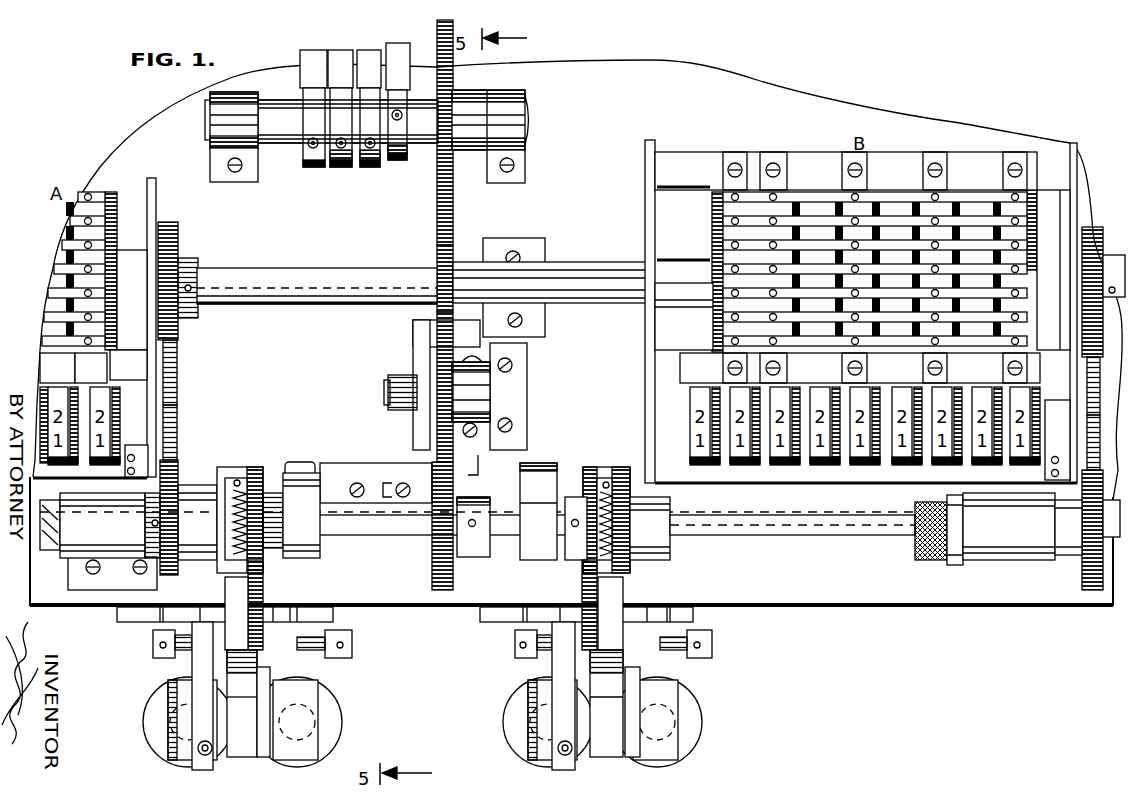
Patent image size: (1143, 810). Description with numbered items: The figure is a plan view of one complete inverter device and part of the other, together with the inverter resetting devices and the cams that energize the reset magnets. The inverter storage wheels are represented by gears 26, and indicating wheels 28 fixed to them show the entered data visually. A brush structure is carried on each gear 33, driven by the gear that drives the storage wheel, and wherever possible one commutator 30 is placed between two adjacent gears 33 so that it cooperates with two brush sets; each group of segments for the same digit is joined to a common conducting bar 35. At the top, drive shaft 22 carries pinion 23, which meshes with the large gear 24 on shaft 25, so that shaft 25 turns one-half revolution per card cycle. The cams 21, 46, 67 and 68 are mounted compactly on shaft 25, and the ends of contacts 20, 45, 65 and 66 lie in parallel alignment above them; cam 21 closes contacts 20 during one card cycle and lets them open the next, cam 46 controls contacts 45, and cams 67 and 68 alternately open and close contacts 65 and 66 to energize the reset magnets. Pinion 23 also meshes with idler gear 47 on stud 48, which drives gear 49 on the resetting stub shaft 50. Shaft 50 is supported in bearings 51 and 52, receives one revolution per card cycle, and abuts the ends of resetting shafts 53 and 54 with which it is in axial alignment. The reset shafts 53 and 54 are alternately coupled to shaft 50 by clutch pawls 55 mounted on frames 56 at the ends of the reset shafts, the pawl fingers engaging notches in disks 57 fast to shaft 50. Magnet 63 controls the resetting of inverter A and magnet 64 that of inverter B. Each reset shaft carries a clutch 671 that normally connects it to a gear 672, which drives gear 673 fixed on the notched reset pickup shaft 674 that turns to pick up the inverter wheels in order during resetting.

The contacts 20 is at (308, 60).
The cam 21 is at (315, 168).
The drive shaft 22 is at (328, 275).
The pinion 23 is at (432, 255).
The gear 24 is at (453, 58).
The shaft 25 is at (423, 148).
The gears 26 is at (100, 456).
The indicating wheels 28 is at (62, 458).
The commutator 30 is at (98, 185).
The gear 33 is at (113, 204).
The common conducting bar 35 is at (57, 242).
The contacts 45 is at (338, 56).
The cam 46 is at (338, 168).
The idler gear 47 is at (432, 436).
The stud 48 is at (397, 412).
The gear 49 is at (433, 582).
The resetting stub shaft 50 is at (404, 538).
The bearing 51 is at (313, 557).
The bearing 52 is at (520, 555).
The resetting shaft 53 is at (782, 538).
The resetting shaft 54 is at (38, 538).
The clutch pawl 55 is at (265, 590).
The frame 56 is at (232, 596).
The disk 57 is at (253, 473).
The magnet 63 is at (325, 705).
The magnet 64 is at (692, 705).
The contacts 65 is at (371, 56).
The contacts 66 is at (402, 56).
The cam 67 is at (370, 168).
The cam 68 is at (393, 162).
The clutch 671 is at (960, 557).
The gear 672 is at (180, 477).
The gear 673 is at (178, 418).
The reset pickup shaft 674 is at (178, 390).